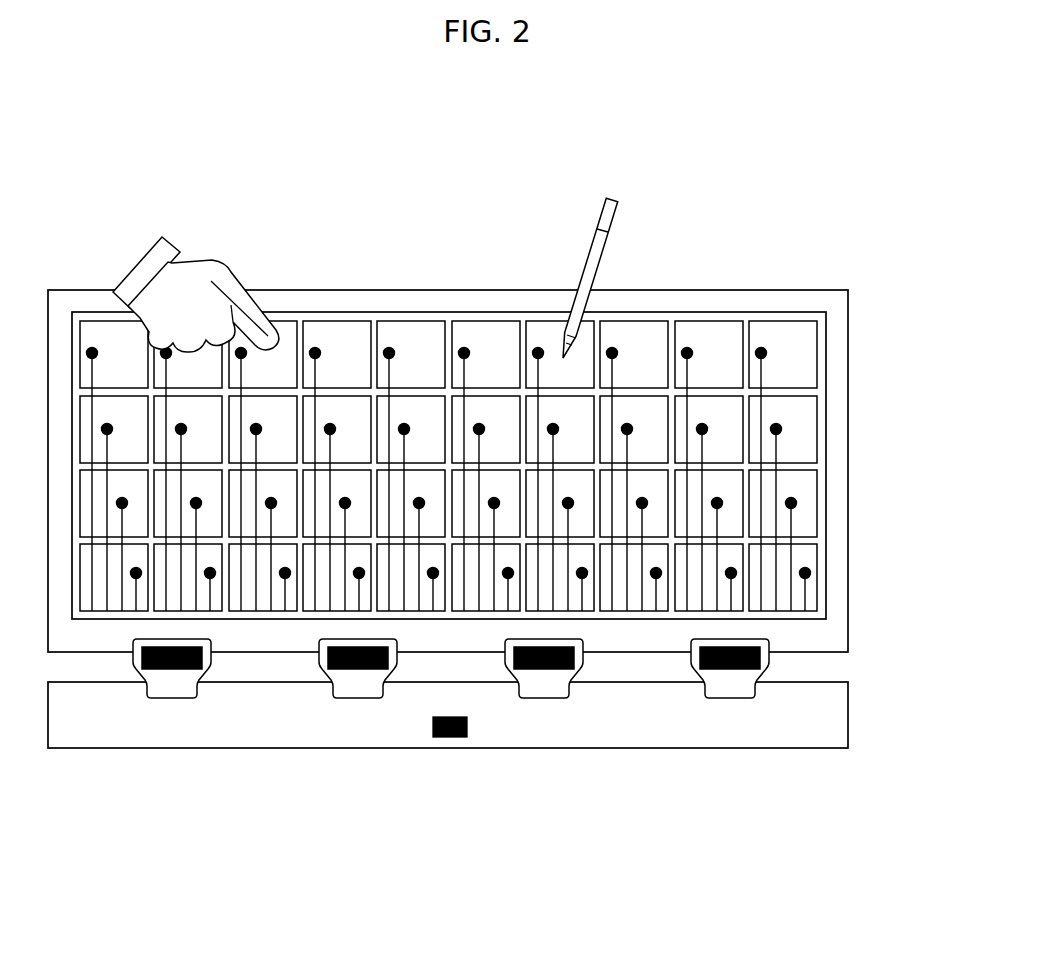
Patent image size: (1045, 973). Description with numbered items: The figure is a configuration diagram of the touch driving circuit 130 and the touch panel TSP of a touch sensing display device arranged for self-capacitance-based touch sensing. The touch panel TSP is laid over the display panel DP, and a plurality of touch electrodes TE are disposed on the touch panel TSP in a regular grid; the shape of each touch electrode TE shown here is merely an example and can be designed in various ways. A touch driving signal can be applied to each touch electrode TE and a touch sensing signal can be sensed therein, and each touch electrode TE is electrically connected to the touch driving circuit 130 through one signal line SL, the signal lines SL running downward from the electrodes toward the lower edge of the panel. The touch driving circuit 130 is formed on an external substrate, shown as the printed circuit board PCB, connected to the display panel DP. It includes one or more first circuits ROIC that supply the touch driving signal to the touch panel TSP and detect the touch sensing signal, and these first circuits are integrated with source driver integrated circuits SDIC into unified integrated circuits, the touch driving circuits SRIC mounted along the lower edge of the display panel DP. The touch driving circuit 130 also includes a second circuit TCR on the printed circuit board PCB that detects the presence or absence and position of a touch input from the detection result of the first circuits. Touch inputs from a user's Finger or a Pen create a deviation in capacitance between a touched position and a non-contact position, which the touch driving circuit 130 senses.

The display panel DP is at (849, 296).
The touch panel TSP is at (827, 338).
The touch electrode TE is at (818, 501).
The signal line SL is at (791, 556).
The touch driving circuit SRIC is at (688, 656).
The second circuit TCR is at (433, 785).
The external substrate PCB is at (777, 750).
The touch driving circuit 130 is at (451, 779).
The finger Finger is at (196, 279).
The pen Pen is at (597, 265).